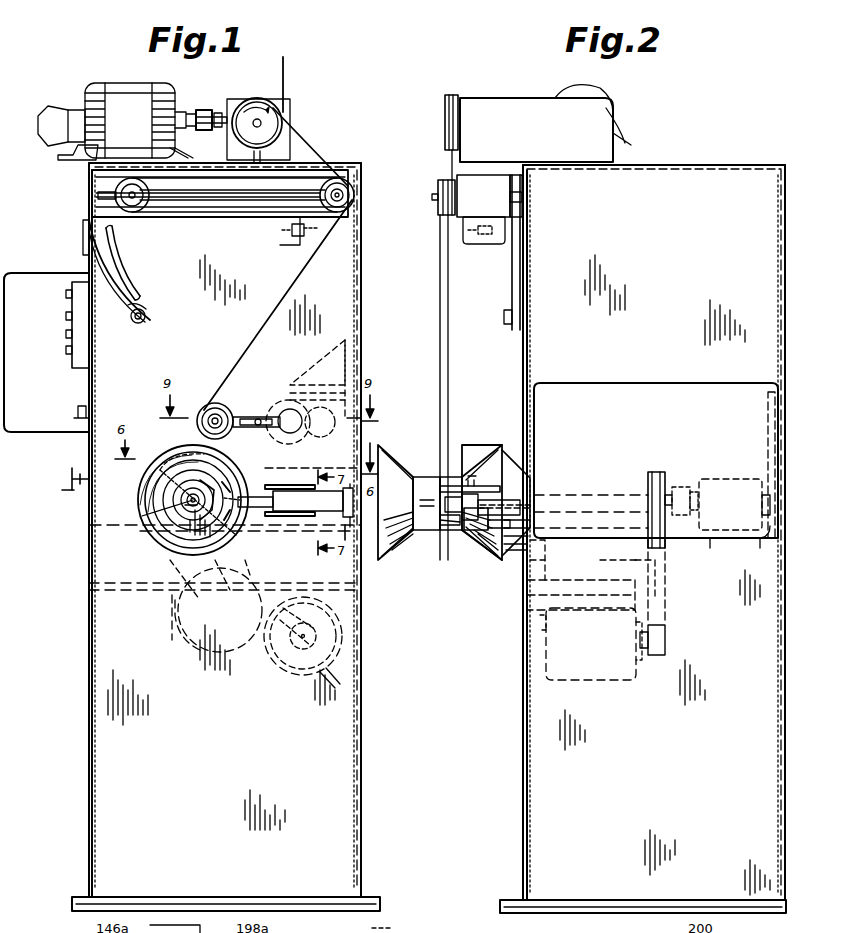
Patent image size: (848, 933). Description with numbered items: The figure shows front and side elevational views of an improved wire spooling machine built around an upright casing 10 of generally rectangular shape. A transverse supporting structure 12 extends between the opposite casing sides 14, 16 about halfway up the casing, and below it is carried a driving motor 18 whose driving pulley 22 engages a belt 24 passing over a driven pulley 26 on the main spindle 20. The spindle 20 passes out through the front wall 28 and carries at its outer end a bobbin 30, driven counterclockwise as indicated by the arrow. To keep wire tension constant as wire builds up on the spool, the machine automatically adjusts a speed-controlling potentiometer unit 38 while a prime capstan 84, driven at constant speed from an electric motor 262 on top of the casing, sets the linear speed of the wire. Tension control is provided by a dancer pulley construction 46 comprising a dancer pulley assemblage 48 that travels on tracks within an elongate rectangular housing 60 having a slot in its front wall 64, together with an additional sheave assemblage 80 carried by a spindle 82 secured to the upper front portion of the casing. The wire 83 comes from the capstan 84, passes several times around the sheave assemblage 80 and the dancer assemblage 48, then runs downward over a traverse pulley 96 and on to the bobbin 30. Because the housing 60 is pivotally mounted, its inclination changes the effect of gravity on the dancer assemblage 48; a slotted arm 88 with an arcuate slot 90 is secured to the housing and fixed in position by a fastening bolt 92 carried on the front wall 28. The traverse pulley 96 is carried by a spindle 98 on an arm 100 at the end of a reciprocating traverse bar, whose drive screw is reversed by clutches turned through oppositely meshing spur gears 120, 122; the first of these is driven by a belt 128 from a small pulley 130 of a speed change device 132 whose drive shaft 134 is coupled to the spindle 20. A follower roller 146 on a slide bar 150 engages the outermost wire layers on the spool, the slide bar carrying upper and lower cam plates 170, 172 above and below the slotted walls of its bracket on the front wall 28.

In FIG. 1, the casing 10 is at (86, 740).
In FIG. 2, the casing 10 is at (516, 790).
In FIG. 1, the supporting structure 12 is at (108, 582).
In FIG. 1, the casing side 14 is at (88, 630).
In FIG. 2, the casing side 14 is at (654, 532).
In FIG. 1, the casing side 16 is at (358, 662).
In FIG. 2, the casing side 16 is at (558, 840).
In FIG. 1, the driving motor 18 is at (290, 680).
In FIG. 2, the driving motor 18 is at (612, 680).
In FIG. 2, the main spindle 20 is at (580, 492).
In FIG. 2, the driving pulley 22 is at (668, 634).
In FIG. 2, the belt 24 is at (660, 596).
In FIG. 2, the driven pulley 26 is at (644, 474).
In FIG. 1, the front wall 28 is at (120, 788).
In FIG. 2, the front wall 28 is at (520, 752).
In FIG. 1, the bobbin 30 is at (148, 541).
In FIG. 2, the bobbin 30 is at (424, 475).
In FIG. 1, the speed-controlling potentiometer unit 38 is at (294, 236).
In FIG. 2, the speed-controlling potentiometer unit 38 is at (486, 236).
In FIG. 1, the dancer pulley construction 46 is at (221, 225).
In FIG. 1, the dancer pulley assemblage 48 is at (150, 220).
In FIG. 1, the housing 60 is at (262, 224).
In FIG. 1, the front wall 64 is at (200, 210).
In FIG. 1, the sheave assemblage 80 is at (355, 185).
In FIG. 2, the sheave assemblage 80 is at (438, 173).
In FIG. 1, the spindle 82 is at (354, 197).
In FIG. 2, the spindle 82 is at (434, 200).
In FIG. 1, the wire 83 is at (284, 70).
In FIG. 1, the prime capstan 84 is at (272, 125).
In FIG. 2, the prime capstan 84 is at (435, 104).
In FIG. 1, the slotted arm 88 is at (128, 268).
In FIG. 2, the slotted arm 88 is at (512, 278).
In FIG. 1, the arcuate slot 90 is at (126, 288).
In FIG. 1, the fastening bolt 92 is at (146, 318).
In FIG. 2, the fastening bolt 92 is at (506, 320).
In FIG. 1, the traverse pulley 96 is at (212, 404).
In FIG. 1, the spindle 98 is at (206, 424).
In FIG. 1, the arm 100 is at (246, 412).
In FIG. 1, the spur gear 120 is at (272, 396).
In FIG. 1, the spur gear 122 is at (335, 392).
In FIG. 1, the belt 128 is at (285, 462).
In FIG. 2, the belt 128 is at (770, 425).
In FIG. 1, the small pulley 130 is at (142, 516).
In FIG. 2, the small pulley 130 is at (760, 540).
In FIG. 2, the speed change device 132 is at (728, 474).
In FIG. 2, the drive shaft 134 is at (690, 484).
In FIG. 1, the roller 146 is at (305, 575).
In FIG. 1, the slide bar 150 is at (258, 500).
In FIG. 1, the upper cam plate 170 is at (288, 484).
In FIG. 2, the upper cam plate 170 is at (468, 490).
In FIG. 1, the lower cam plate 172 is at (276, 531).
In FIG. 2, the lower cam plate 172 is at (456, 530).
In FIG. 1, the electric motor 262 is at (128, 92).
In FIG. 2, the electric motor 262 is at (590, 96).